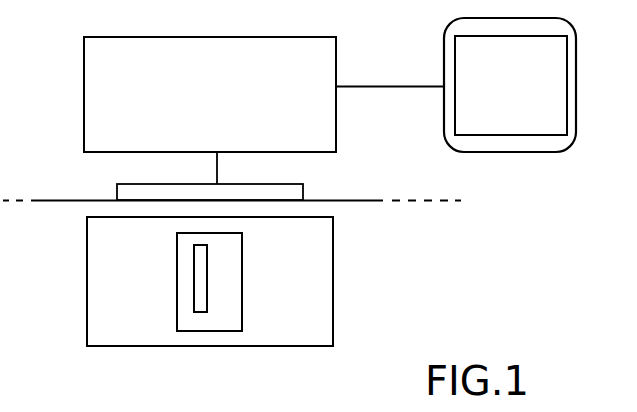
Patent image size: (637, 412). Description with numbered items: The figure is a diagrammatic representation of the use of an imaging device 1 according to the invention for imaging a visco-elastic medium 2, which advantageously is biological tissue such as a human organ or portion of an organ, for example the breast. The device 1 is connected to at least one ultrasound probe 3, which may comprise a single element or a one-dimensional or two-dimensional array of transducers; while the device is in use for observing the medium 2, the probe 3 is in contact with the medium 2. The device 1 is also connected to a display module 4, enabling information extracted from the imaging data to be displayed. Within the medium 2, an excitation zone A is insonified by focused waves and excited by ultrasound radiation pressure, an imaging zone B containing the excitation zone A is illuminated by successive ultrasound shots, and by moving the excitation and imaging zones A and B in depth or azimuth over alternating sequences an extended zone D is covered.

The imaging device 1 is at (98, 97).
The visco-elastic medium 2 is at (440, 246).
The ultrasound probe 3 is at (122, 193).
The display module 4 is at (558, 78).
The excitation zone A is at (202, 280).
The imaging zone B is at (223, 278).
The extended zone D is at (315, 286).